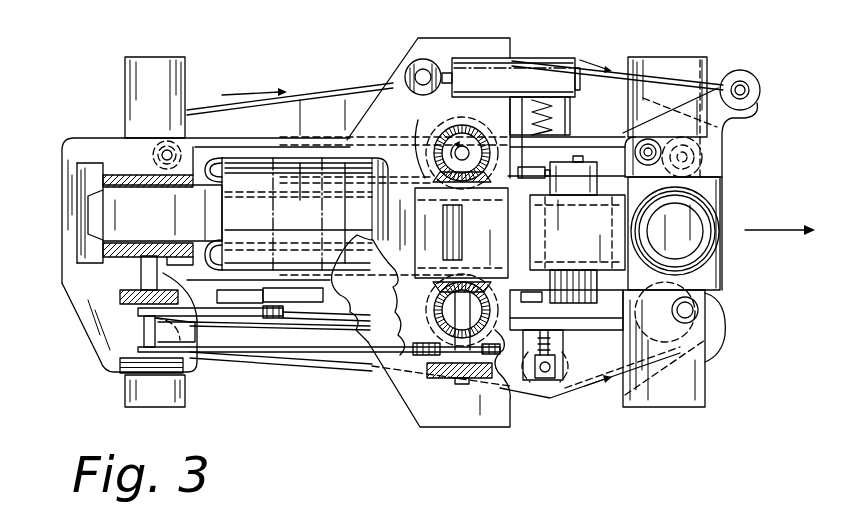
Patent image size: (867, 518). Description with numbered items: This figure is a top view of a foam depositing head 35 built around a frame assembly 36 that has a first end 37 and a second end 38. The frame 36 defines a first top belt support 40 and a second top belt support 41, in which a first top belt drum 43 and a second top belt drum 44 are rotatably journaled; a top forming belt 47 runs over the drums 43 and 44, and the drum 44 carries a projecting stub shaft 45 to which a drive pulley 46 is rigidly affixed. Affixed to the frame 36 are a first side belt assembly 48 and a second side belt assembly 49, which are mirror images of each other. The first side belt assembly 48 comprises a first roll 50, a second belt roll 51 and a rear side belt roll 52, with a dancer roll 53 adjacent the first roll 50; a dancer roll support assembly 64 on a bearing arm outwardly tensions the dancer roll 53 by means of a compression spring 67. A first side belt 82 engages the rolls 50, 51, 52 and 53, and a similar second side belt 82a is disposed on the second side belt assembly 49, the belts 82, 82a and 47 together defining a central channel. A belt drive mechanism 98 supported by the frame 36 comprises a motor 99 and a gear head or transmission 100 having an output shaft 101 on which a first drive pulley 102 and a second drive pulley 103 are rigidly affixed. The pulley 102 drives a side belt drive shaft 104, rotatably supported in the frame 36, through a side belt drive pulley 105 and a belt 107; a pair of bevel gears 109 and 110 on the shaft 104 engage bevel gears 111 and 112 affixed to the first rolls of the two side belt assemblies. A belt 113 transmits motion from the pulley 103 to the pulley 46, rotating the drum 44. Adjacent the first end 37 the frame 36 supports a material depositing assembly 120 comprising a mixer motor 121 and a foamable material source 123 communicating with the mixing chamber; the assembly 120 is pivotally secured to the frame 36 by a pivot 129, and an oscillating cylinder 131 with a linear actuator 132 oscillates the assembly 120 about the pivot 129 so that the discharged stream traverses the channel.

The foam depositing head 35 is at (90, 67).
The frame assembly 36 is at (78, 305).
The first end 37 is at (722, 222).
The second end 38 is at (62, 165).
The first top belt support 40 is at (566, 300).
The second top belt support 41 is at (283, 296).
The first top belt drum 43 is at (603, 173).
The second top belt drum 44 is at (267, 168).
The stub shaft 45 is at (300, 322).
The drive pulley 46 is at (243, 316).
The top forming belt 47 is at (300, 158).
The first side belt assembly 48 is at (297, 374).
The second side belt assembly 49 is at (217, 97).
The first roll 50 is at (410, 352).
The second belt roll 51 is at (726, 300).
The rear side belt roll 52 is at (138, 312).
The dancer roll 53 is at (577, 372).
The dancer roll support assembly 64 is at (560, 335).
The compression spring 67 is at (565, 352).
The first side belt 82 is at (362, 368).
The second side belt 82a is at (337, 90).
The belt drive mechanism 98 is at (112, 172).
The motor 99 is at (345, 178).
The gear head or transmission 100 is at (98, 210).
The output shaft 101 is at (135, 328).
The first drive pulley 102 is at (135, 350).
The second drive pulley 103 is at (121, 302).
The side belt drive shaft 104 is at (460, 385).
The side belt drive pulley 105 is at (512, 418).
The belt 107 is at (310, 355).
The bevel gear 109 is at (425, 300).
The bevel gear 110 is at (403, 138).
The bevel gear 111 is at (435, 308).
The bevel gear 112 is at (468, 135).
The belt 113 is at (196, 346).
The material depositing assembly 120 is at (722, 192).
The mixer motor 121 is at (718, 250).
The foamable material source 123 is at (615, 232).
The pivot 129 is at (640, 146).
The oscillating cylinder 131 is at (476, 65).
The linear actuator 132 is at (668, 88).